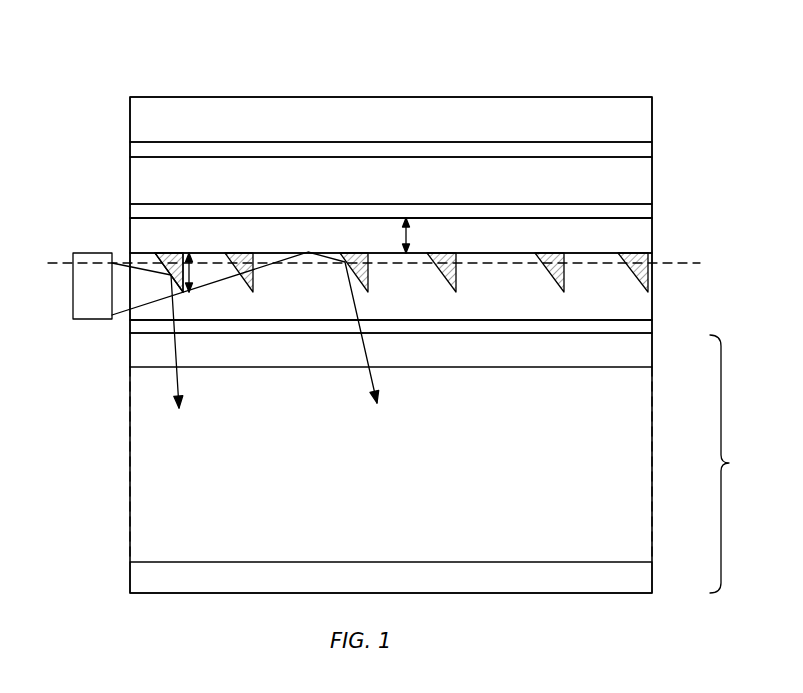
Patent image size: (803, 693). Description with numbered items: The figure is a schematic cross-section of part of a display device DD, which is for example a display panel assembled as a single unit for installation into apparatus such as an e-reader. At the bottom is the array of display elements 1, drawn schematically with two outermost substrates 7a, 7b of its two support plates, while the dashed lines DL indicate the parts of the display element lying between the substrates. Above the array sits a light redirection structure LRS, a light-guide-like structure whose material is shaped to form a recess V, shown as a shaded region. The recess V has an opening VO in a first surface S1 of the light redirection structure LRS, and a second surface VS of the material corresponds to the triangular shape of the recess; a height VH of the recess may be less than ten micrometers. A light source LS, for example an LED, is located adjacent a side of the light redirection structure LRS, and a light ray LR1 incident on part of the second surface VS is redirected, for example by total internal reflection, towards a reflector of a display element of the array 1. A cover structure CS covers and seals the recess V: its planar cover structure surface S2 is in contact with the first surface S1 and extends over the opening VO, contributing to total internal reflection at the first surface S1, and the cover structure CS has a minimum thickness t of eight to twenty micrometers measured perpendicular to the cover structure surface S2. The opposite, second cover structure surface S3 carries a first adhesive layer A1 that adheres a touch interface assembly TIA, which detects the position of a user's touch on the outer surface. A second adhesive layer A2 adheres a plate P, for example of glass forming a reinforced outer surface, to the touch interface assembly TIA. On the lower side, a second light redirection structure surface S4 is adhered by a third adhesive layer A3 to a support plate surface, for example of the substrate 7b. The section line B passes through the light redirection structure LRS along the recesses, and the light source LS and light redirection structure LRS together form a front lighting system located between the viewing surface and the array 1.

The display device DD is at (607, 79).
The plate P is at (652, 120).
The second adhesive layer A2 is at (652, 150).
The touch interface assembly TIA is at (652, 178).
The first adhesive layer A1 is at (652, 212).
The cover structure CS is at (652, 237).
The second cover structure surface S3 is at (466, 218).
The light redirection structure LRS is at (652, 300).
The cover structure surface S2 is at (527, 253).
The second light redirection structure surface S4 is at (500, 318).
The recess V is at (165, 262).
The opening VO is at (172, 252).
The first surface S1 is at (200, 254).
The second surface VS is at (195, 270).
The height of the recess VH is at (194, 280).
The thickness t is at (412, 238).
The third adhesive layer A3 is at (652, 328).
The substrate 7b is at (652, 352).
The dashed lines DL is at (652, 463).
The substrate 7a is at (652, 577).
The array of display elements 1 is at (729, 464).
The section line B is at (374, 264).
The light source LS is at (90, 321).
The light ray LR1 is at (181, 387).